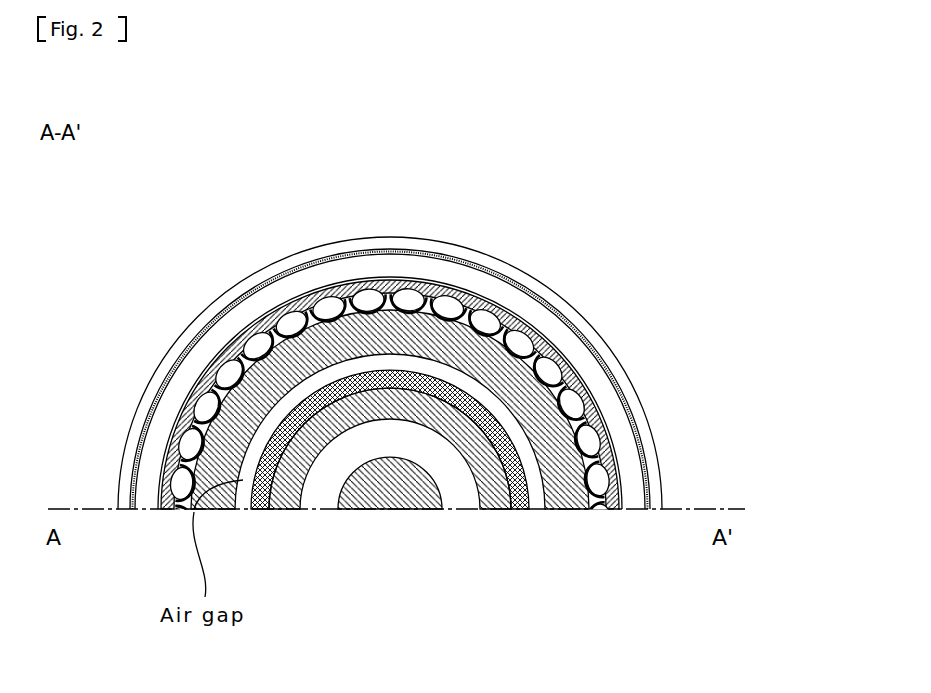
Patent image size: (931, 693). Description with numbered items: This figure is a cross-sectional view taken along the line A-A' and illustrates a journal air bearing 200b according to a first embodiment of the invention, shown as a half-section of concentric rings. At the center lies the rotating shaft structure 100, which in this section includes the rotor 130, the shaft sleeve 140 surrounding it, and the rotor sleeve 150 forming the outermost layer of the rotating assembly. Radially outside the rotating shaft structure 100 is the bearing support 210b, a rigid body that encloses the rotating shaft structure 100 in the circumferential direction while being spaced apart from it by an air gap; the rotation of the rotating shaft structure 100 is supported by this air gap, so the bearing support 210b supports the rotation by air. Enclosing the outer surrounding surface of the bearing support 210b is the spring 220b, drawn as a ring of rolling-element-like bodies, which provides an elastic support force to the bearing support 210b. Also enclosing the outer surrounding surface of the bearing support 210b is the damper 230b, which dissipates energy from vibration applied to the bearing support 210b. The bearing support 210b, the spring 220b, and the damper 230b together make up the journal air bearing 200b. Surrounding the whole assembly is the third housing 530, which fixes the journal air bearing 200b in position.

The third housing 530 is at (396, 257).
The journal air bearing 200b is at (495, 411).
The bearing support 210b is at (585, 466).
The spring 220b is at (590, 397).
The damper 230b is at (547, 318).
The rotating shaft structure 100 is at (384, 498).
The rotor 130 is at (390, 509).
The shaft sleeve 140 is at (492, 509).
The rotor sleeve 150 is at (257, 509).